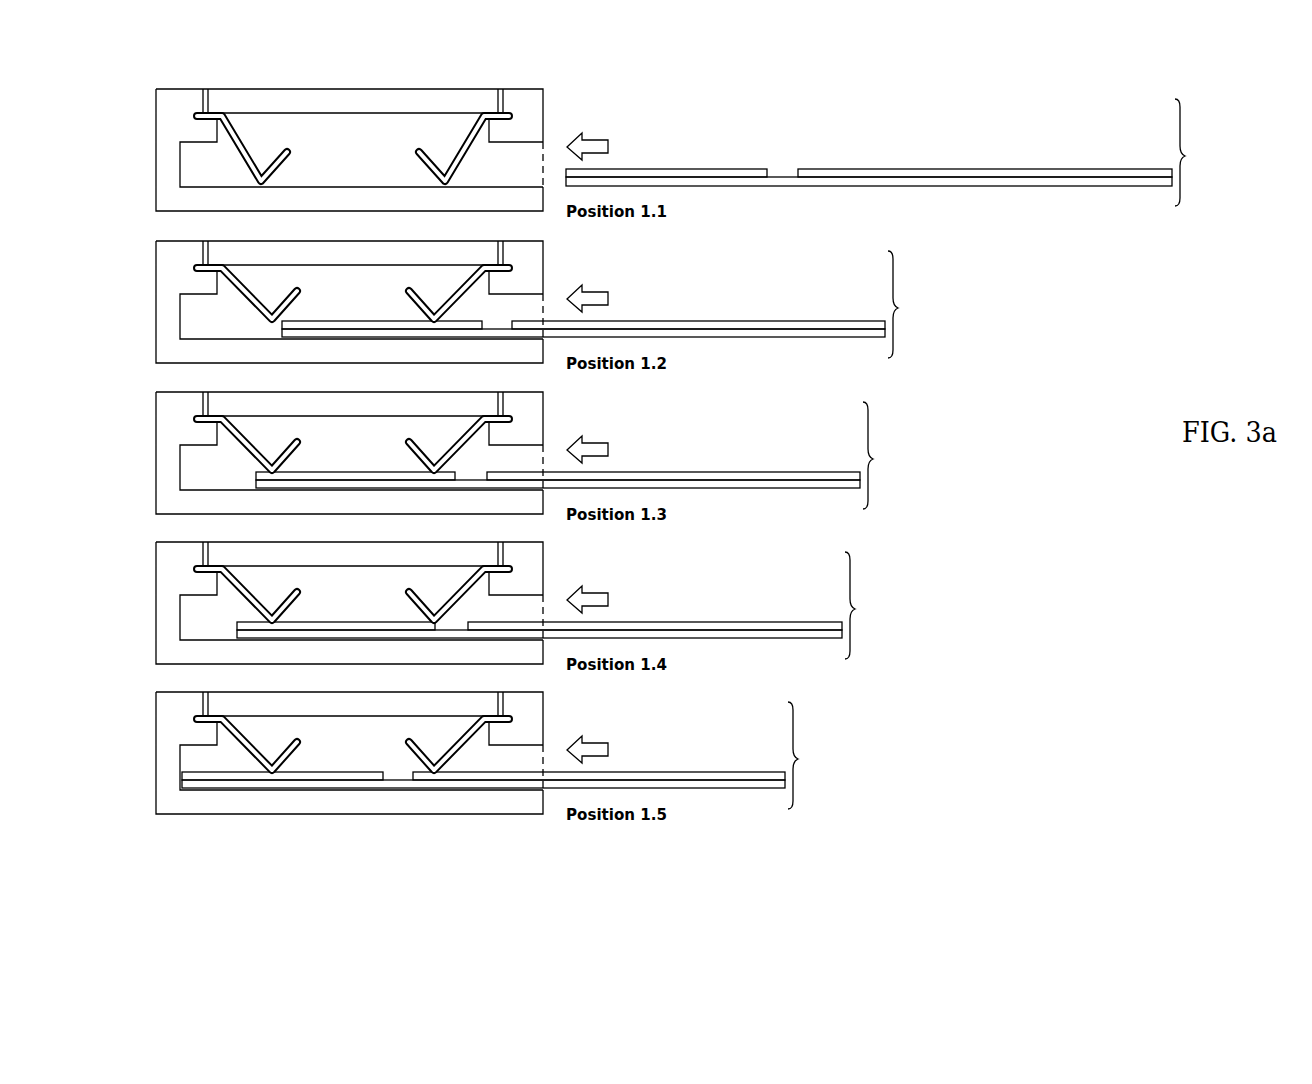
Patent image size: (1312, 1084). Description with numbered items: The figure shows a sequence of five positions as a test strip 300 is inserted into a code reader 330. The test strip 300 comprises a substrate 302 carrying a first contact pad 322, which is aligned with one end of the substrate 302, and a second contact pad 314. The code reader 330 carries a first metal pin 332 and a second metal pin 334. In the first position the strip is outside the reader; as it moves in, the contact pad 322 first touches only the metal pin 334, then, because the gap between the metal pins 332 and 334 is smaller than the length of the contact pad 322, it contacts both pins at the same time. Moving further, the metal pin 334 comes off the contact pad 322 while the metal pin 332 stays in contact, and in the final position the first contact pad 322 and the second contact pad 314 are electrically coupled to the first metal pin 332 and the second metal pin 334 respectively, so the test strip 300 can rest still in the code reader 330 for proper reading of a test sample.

The test strip 300 is at (1006, 454).
The substrate 302 is at (702, 183).
The second contact pad 314 is at (890, 170).
The first contact pad 322 is at (630, 170).
The code reader 330 is at (180, 130).
The first metal pin 332 is at (273, 157).
The second metal pin 334 is at (420, 155).